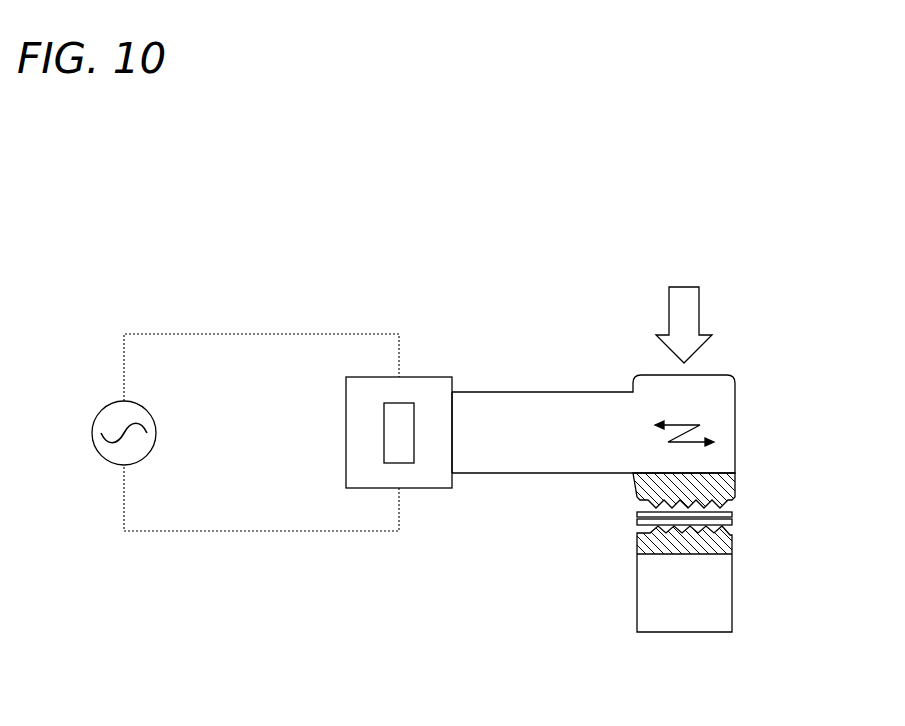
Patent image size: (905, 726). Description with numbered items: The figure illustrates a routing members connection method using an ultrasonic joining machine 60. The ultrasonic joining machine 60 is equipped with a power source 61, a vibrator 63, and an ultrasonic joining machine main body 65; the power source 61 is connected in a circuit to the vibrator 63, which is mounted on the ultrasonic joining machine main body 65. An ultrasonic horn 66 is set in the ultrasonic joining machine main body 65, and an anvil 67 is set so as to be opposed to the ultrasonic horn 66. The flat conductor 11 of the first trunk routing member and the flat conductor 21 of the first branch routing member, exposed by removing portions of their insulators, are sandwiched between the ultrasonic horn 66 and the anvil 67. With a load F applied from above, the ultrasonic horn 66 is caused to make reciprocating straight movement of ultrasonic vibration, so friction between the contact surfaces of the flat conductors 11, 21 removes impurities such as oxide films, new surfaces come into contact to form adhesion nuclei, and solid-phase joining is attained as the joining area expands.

The ultrasonic joining machine 60 is at (560, 266).
The power source 61 is at (106, 405).
The vibrator 63 is at (403, 410).
The ultrasonic joining machine main body 65 is at (650, 374).
The ultrasonic horn 66 is at (737, 487).
The flat conductor 21 is at (733, 512).
The flat conductor 11 is at (733, 521).
The anvil 67 is at (735, 548).